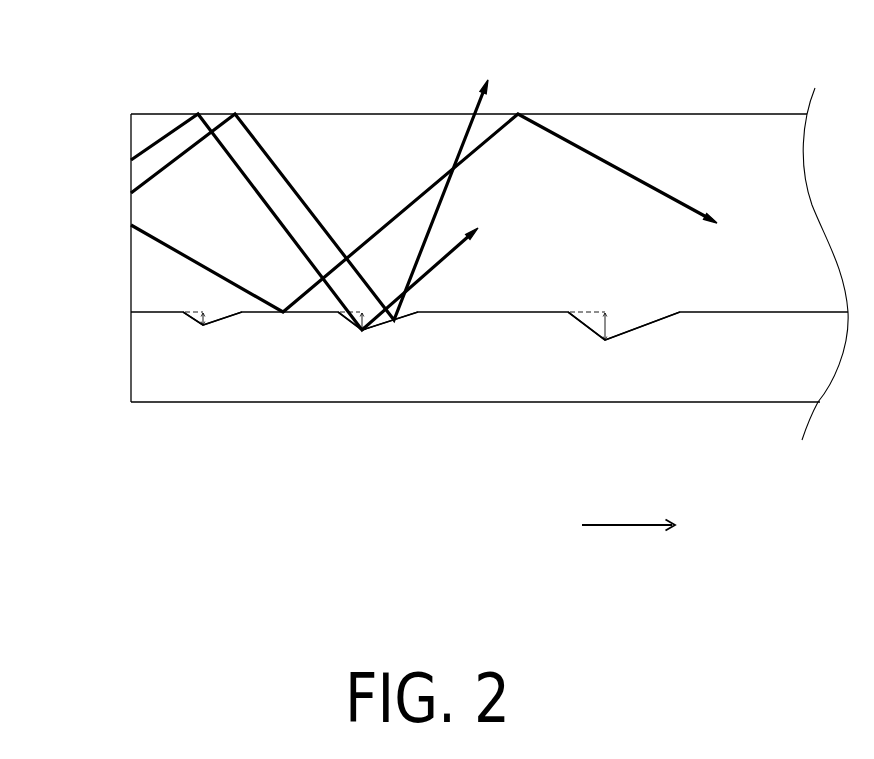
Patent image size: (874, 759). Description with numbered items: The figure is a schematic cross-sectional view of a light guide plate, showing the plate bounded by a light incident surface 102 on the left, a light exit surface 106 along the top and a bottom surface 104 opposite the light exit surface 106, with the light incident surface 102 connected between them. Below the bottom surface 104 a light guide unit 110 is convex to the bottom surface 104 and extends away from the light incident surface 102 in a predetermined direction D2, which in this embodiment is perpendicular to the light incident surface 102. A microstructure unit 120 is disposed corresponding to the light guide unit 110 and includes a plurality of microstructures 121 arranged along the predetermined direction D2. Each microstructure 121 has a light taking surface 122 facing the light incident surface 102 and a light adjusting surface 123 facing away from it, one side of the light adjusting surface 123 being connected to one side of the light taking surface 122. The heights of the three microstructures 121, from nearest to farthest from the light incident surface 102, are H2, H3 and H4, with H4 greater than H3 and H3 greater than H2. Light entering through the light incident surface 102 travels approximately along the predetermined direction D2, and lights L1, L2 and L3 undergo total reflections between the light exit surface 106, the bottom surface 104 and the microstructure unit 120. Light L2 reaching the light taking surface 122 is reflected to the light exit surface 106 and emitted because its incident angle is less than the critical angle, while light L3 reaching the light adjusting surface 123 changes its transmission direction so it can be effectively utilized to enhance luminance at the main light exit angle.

The light incident surface 102 is at (128, 130).
The bottom surface 104 is at (257, 315).
The light exit surface 106 is at (289, 112).
The light guide unit 110 is at (572, 404).
The microstructure unit 120 is at (181, 323).
The microstructure 121 is at (363, 340).
The light taking surface 122 is at (412, 326).
The light adjusting surface 123 is at (351, 330).
The height of first microstructure H2 is at (201, 330).
The height of second microstructure H3 is at (373, 333).
The height of third microstructure H4 is at (606, 326).
The light L1 is at (661, 192).
The light L2 is at (475, 105).
The light L3 is at (453, 257).
The predetermined direction D2 is at (628, 546).